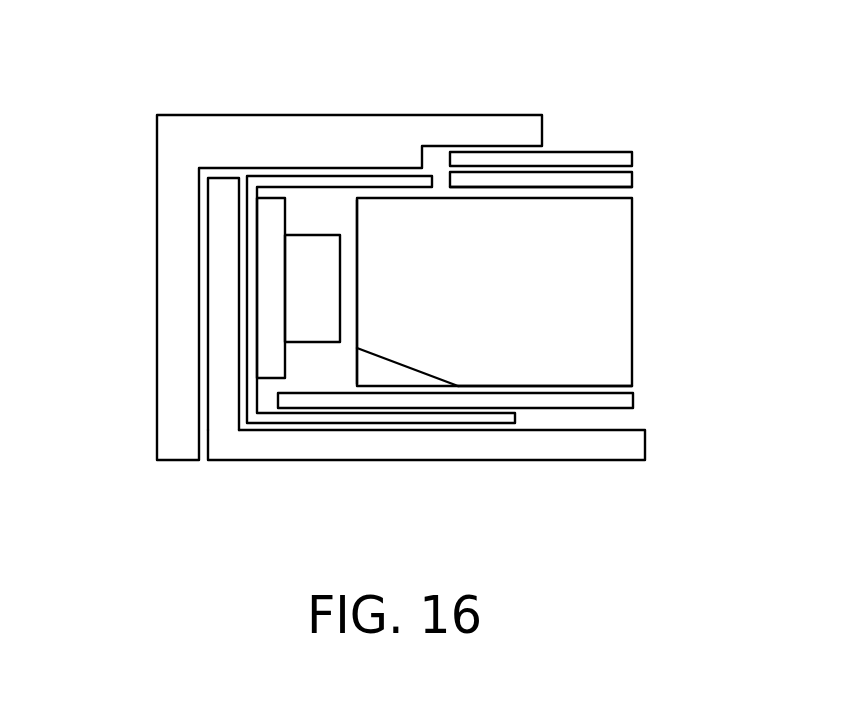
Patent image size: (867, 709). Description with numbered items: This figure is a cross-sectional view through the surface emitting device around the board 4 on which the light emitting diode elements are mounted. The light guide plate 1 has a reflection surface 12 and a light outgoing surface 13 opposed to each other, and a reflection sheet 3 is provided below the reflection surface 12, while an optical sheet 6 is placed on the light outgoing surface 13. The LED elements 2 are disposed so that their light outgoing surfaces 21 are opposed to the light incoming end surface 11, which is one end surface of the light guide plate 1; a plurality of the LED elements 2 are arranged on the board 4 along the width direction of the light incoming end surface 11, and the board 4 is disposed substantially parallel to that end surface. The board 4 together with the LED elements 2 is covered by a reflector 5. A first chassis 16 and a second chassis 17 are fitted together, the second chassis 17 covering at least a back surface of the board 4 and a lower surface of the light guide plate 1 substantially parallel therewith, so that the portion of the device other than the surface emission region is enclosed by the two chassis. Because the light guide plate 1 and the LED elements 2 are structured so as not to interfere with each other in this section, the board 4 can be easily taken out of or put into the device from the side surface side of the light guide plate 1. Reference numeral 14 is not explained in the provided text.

The light guide plate 1 is at (603, 290).
The light emitting diode (LED) elements 2 is at (310, 253).
The reflection sheet 3 is at (635, 400).
The board 4 is at (257, 277).
The reflector 5 is at (247, 346).
The optical sheet 6 is at (654, 190).
The light incoming end surface 11 is at (357, 306).
The reflection surface 12 is at (603, 383).
The light outgoing surface 13 is at (622, 198).
The inclined reflecting portion 14 is at (393, 372).
The first chassis 16 is at (257, 115).
The second chassis 17 is at (557, 462).
The light outgoing surfaces of the LED elements 21 is at (341, 262).